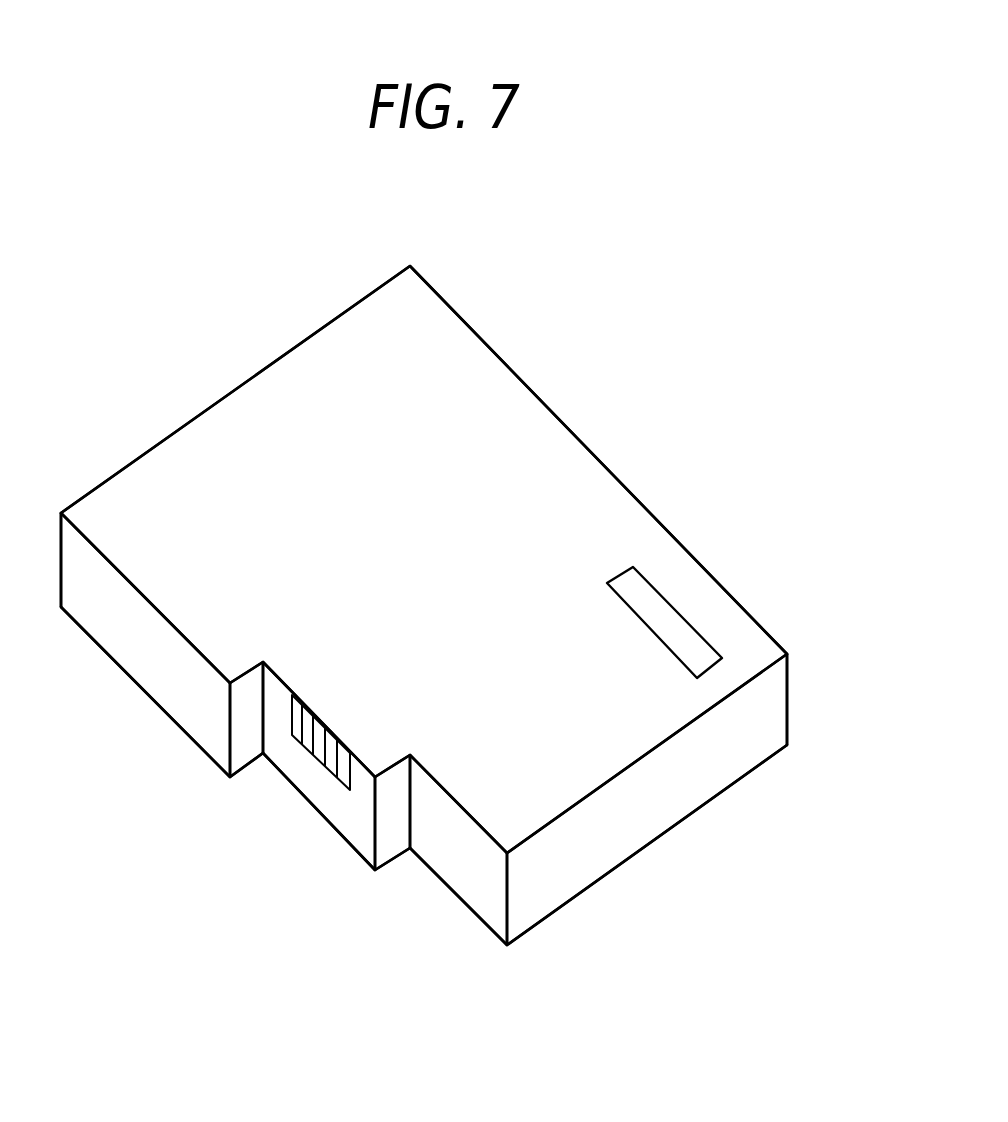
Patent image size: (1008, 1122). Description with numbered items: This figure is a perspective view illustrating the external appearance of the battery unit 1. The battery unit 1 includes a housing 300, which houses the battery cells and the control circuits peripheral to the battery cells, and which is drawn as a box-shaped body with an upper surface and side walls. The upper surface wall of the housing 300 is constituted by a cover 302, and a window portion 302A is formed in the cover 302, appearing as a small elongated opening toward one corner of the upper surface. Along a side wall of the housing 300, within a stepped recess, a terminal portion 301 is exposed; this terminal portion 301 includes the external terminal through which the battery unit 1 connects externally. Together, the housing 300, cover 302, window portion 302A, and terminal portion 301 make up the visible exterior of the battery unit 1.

The battery unit 1 is at (233, 392).
The housing 300 is at (730, 800).
The terminal portion 301 is at (330, 780).
The cover 302 is at (465, 375).
The window portion 302A is at (697, 628).